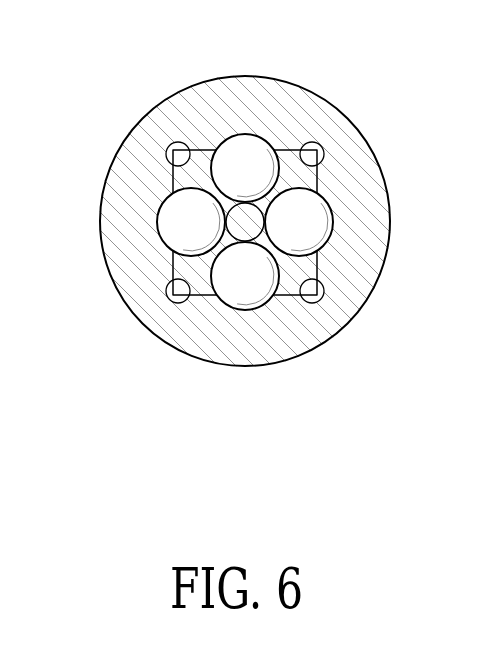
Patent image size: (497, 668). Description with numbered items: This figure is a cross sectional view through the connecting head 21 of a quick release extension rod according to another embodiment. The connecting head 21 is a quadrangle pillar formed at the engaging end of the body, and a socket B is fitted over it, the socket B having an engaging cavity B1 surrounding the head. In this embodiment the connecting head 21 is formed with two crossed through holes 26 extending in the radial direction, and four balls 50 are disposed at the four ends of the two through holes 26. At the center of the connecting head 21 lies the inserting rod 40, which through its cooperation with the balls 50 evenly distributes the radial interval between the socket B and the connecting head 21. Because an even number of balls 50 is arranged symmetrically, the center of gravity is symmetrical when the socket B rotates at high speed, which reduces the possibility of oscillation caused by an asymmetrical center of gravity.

The socket B is at (340, 112).
The engaging cavity B1 is at (271, 150).
The connecting head 21 is at (320, 252).
The through hole 26 is at (277, 253).
The inserting rod 40 is at (242, 230).
The ball 50 is at (168, 215).